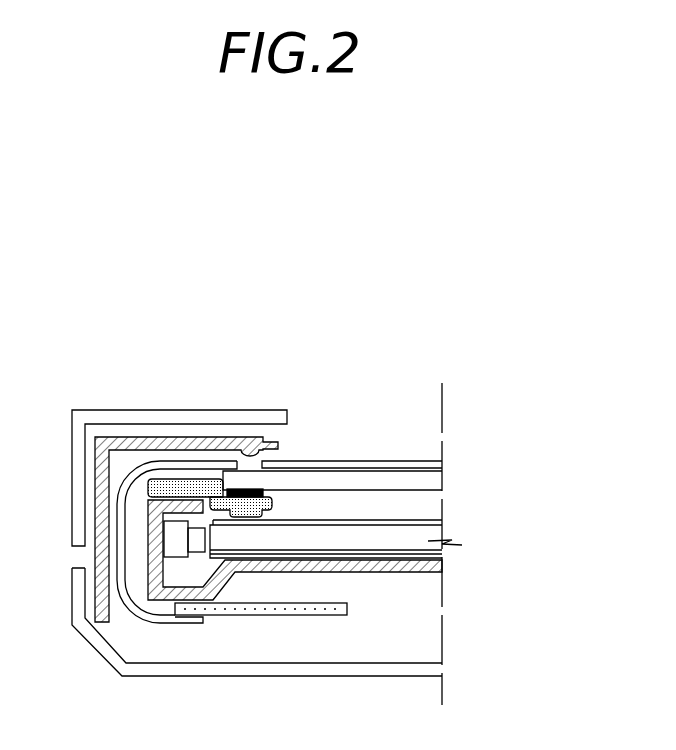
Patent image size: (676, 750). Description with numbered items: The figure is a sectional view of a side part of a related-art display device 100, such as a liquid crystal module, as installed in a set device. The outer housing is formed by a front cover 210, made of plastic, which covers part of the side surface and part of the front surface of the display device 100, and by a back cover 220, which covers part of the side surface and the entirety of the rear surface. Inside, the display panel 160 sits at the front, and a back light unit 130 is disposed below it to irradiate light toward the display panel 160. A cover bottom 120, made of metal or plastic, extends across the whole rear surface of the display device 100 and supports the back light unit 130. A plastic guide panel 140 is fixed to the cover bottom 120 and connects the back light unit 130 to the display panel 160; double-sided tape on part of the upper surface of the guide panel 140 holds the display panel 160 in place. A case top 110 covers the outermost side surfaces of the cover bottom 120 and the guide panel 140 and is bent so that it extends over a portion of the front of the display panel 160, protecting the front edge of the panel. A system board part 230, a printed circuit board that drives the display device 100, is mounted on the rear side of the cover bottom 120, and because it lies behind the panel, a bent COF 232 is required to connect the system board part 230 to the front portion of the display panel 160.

The display device 100 is at (86, 329).
The case top 110 is at (283, 445).
The cover bottom 120 is at (438, 563).
The back light unit 130 is at (442, 520).
The guide panel 140 is at (170, 487).
The display panel 160 is at (437, 478).
The front cover 210 is at (236, 409).
The back cover 220 is at (106, 652).
The system board part 230 is at (318, 608).
The bent COF 232 is at (188, 618).